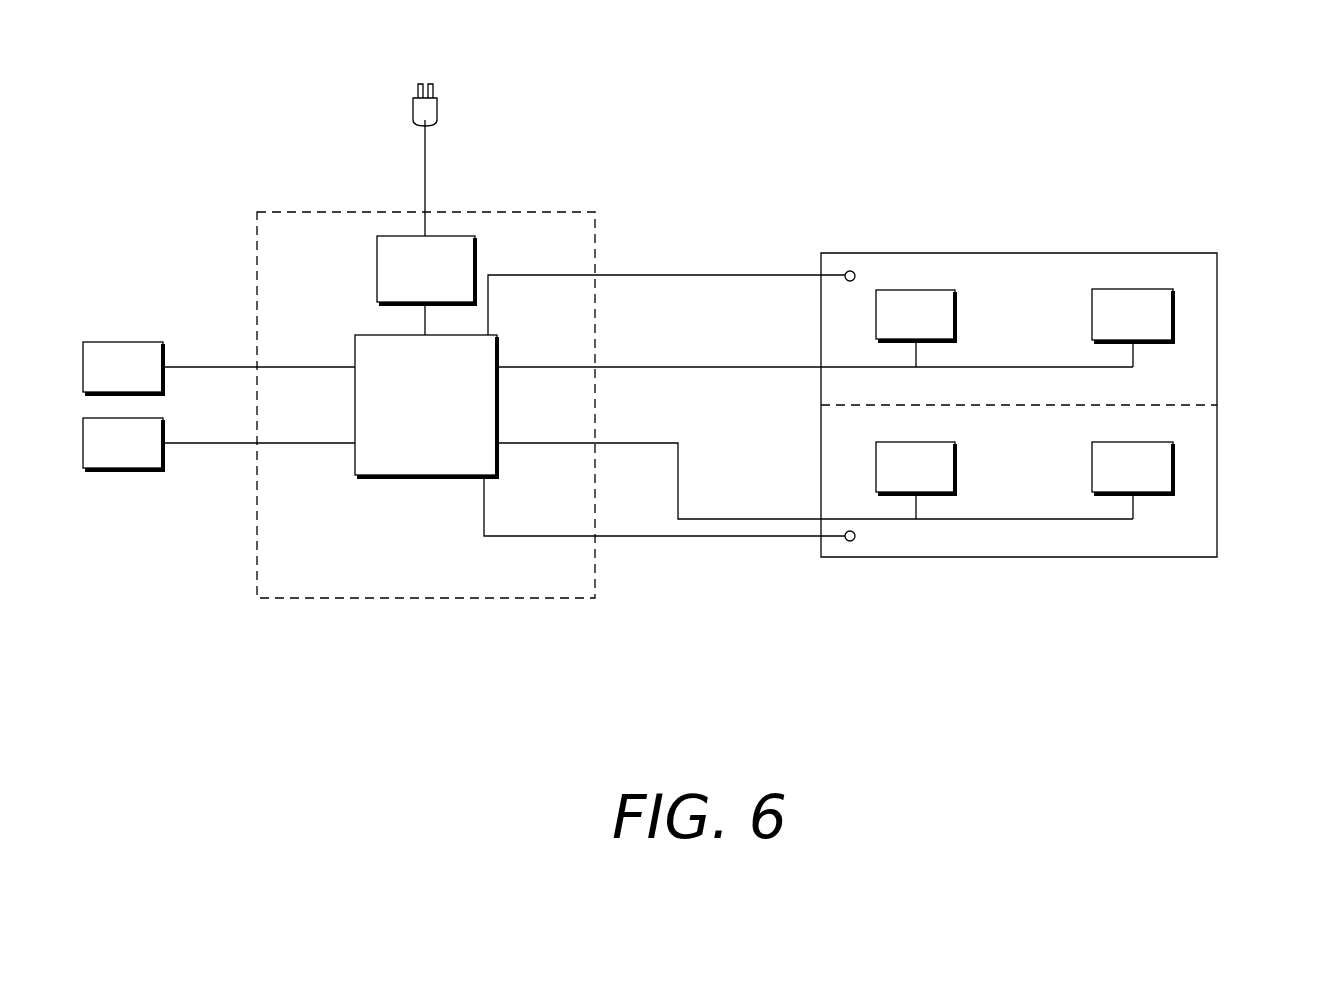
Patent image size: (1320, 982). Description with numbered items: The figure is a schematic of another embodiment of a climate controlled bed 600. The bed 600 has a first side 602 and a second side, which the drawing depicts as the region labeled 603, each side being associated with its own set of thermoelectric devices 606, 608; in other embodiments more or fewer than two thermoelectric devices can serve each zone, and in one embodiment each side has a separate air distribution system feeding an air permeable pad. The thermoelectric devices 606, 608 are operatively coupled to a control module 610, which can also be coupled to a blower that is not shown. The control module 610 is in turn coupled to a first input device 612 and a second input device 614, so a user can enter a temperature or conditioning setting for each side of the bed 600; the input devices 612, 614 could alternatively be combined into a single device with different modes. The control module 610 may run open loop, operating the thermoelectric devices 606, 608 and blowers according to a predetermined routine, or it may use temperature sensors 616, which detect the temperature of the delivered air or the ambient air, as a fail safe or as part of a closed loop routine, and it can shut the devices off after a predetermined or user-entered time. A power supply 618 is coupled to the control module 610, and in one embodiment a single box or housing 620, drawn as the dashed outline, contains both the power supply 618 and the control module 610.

The climate controlled bed 600 is at (1161, 152).
The first side 602 is at (1212, 326).
The lower panel section 603 is at (1212, 476).
The thermoelectric device 606 is at (915, 290).
The thermoelectric device 608 is at (960, 474).
The control module 610 is at (393, 480).
The first input device 612 is at (122, 340).
The second input device 614 is at (125, 470).
The temperature sensor 616 is at (852, 270).
The power supply 618 is at (458, 233).
The housing 620 is at (596, 228).